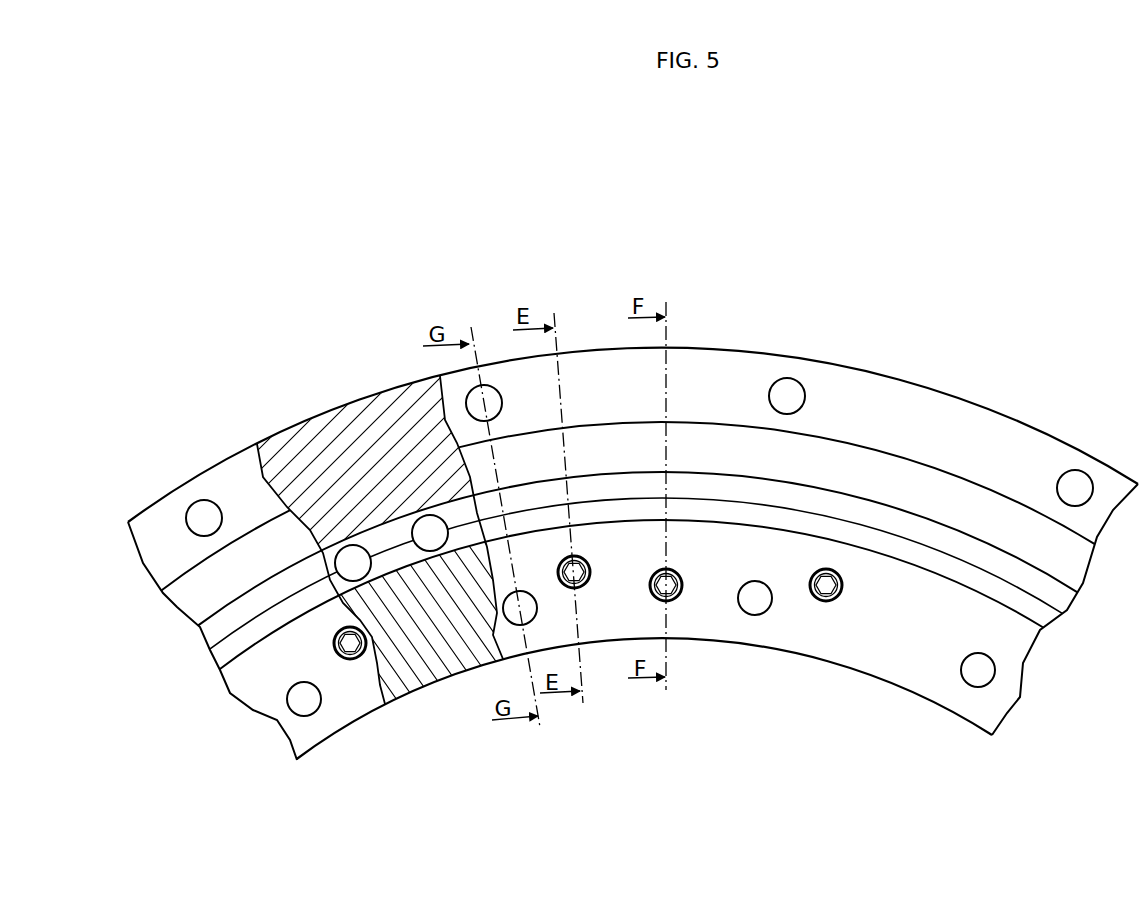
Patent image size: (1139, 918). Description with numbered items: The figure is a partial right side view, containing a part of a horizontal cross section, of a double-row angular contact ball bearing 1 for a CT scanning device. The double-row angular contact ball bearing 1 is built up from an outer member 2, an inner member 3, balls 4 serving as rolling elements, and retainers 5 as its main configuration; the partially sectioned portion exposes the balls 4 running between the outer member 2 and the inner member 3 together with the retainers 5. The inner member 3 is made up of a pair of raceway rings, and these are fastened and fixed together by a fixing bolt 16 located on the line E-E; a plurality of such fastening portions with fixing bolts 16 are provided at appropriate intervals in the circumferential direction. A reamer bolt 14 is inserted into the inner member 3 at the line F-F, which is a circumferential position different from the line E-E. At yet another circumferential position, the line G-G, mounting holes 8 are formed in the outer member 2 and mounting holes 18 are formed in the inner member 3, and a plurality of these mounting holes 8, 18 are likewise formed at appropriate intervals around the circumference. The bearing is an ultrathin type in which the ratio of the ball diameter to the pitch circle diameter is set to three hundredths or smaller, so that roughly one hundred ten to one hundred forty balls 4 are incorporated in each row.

The double-row angular contact ball bearing 1 is at (723, 320).
The outer member 2 is at (965, 395).
The inner member 3 is at (888, 684).
The balls 4 is at (380, 537).
The retainers 5 is at (407, 519).
The mounting holes 8 is at (198, 498).
The reamer bolt 14 is at (674, 600).
The fixing bolt 16 is at (353, 659).
The mounting holes 18 is at (308, 712).